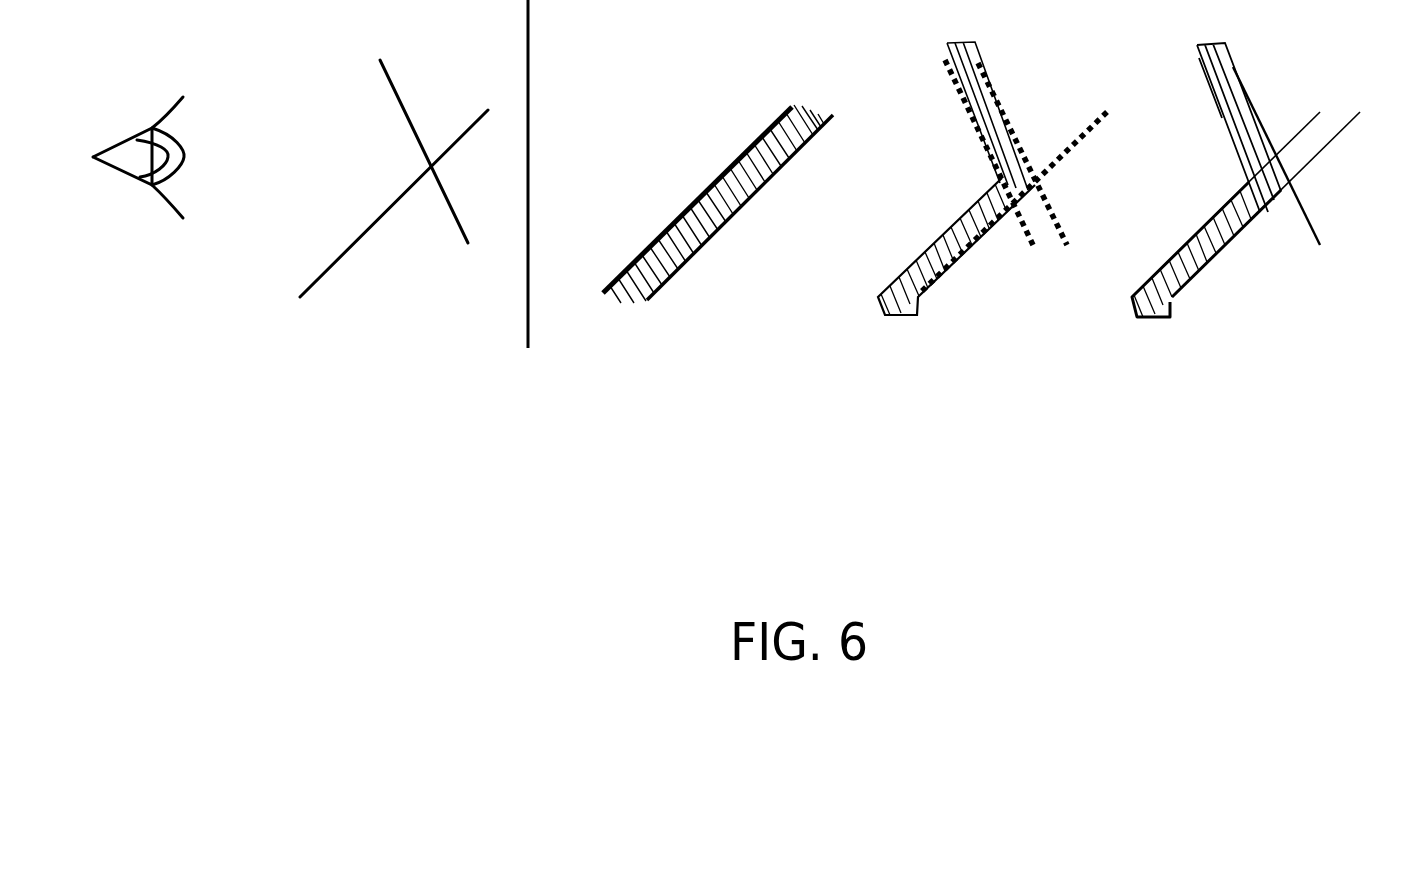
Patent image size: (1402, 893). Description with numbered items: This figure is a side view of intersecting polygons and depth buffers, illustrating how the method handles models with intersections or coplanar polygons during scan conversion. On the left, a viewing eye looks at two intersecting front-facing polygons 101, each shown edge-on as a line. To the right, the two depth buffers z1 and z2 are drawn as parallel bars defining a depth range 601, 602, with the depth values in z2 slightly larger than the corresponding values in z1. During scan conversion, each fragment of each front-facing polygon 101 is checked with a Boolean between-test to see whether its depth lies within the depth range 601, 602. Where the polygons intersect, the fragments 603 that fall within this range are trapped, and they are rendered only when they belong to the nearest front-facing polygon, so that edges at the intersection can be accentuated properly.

The front-facing polygon 101 is at (395, 90).
The z1 depth range bound 601 is at (580, 345).
The z2 depth range bound 602 is at (683, 345).
The fragments 603 is at (1184, 281).